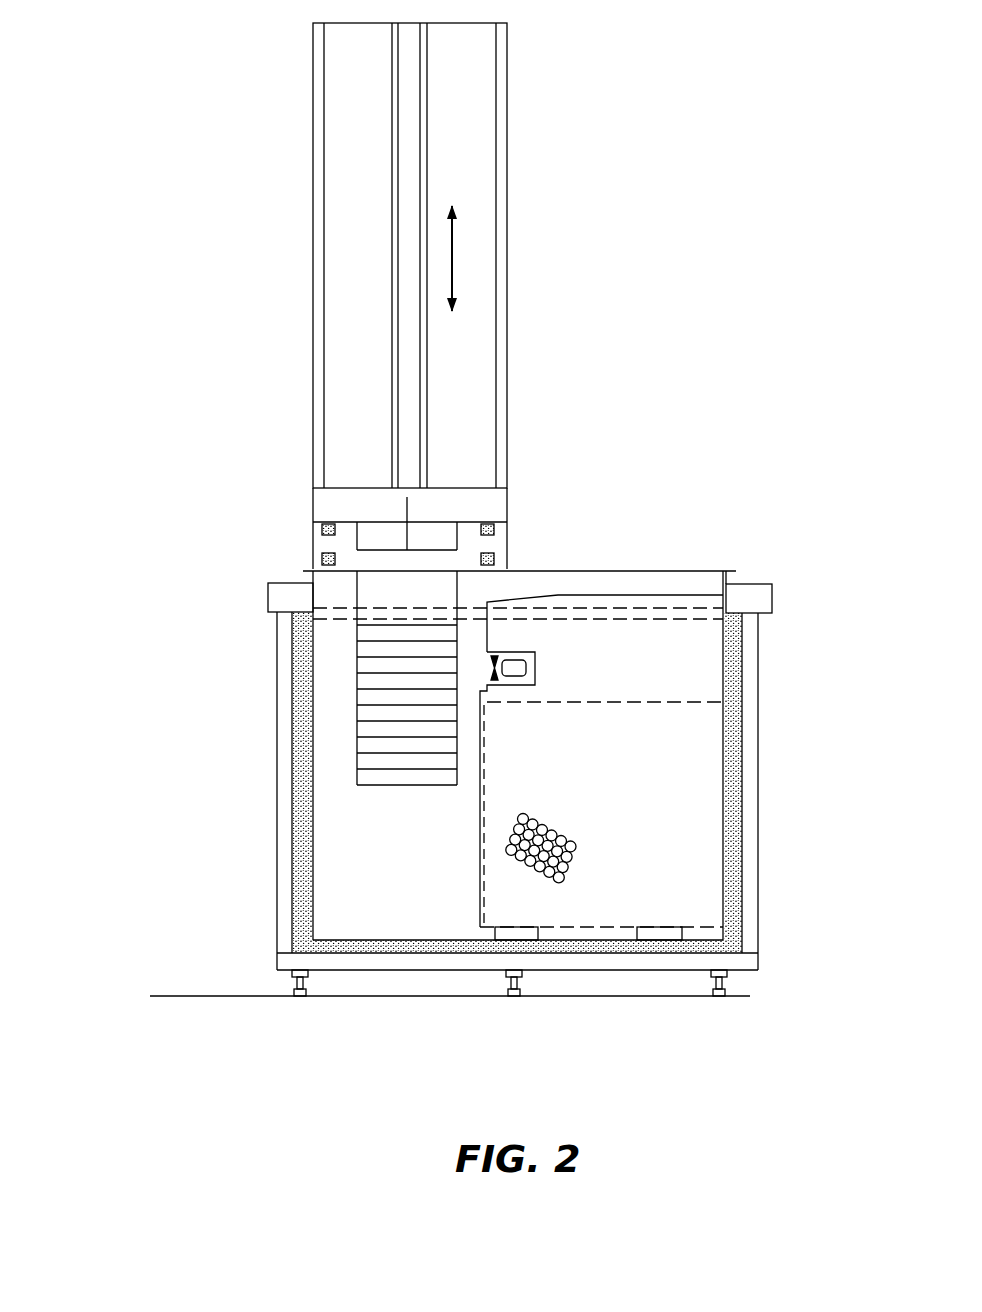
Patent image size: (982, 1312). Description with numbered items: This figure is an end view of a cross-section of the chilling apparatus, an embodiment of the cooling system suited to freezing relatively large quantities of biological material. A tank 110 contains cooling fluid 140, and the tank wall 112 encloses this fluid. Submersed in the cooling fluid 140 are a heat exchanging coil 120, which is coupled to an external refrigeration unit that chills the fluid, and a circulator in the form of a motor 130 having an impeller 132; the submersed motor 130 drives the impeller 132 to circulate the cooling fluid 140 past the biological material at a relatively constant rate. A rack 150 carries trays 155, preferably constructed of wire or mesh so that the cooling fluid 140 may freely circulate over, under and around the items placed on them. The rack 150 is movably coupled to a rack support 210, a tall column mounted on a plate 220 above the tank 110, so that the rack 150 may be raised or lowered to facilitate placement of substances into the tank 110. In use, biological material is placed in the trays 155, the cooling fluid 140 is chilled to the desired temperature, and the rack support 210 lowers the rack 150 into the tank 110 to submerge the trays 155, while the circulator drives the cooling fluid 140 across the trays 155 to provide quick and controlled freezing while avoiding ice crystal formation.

The tank 110 is at (779, 857).
The insulated tank wall 112 is at (290, 796).
The heat exchanging coil 120 is at (668, 820).
The motor 130 is at (538, 663).
The impeller 132 is at (515, 640).
The cooling fluid 140 is at (336, 873).
The rack 150 is at (346, 638).
The trays 155 is at (358, 717).
The rack support 210 is at (312, 108).
The mounting plate 220 is at (276, 578).